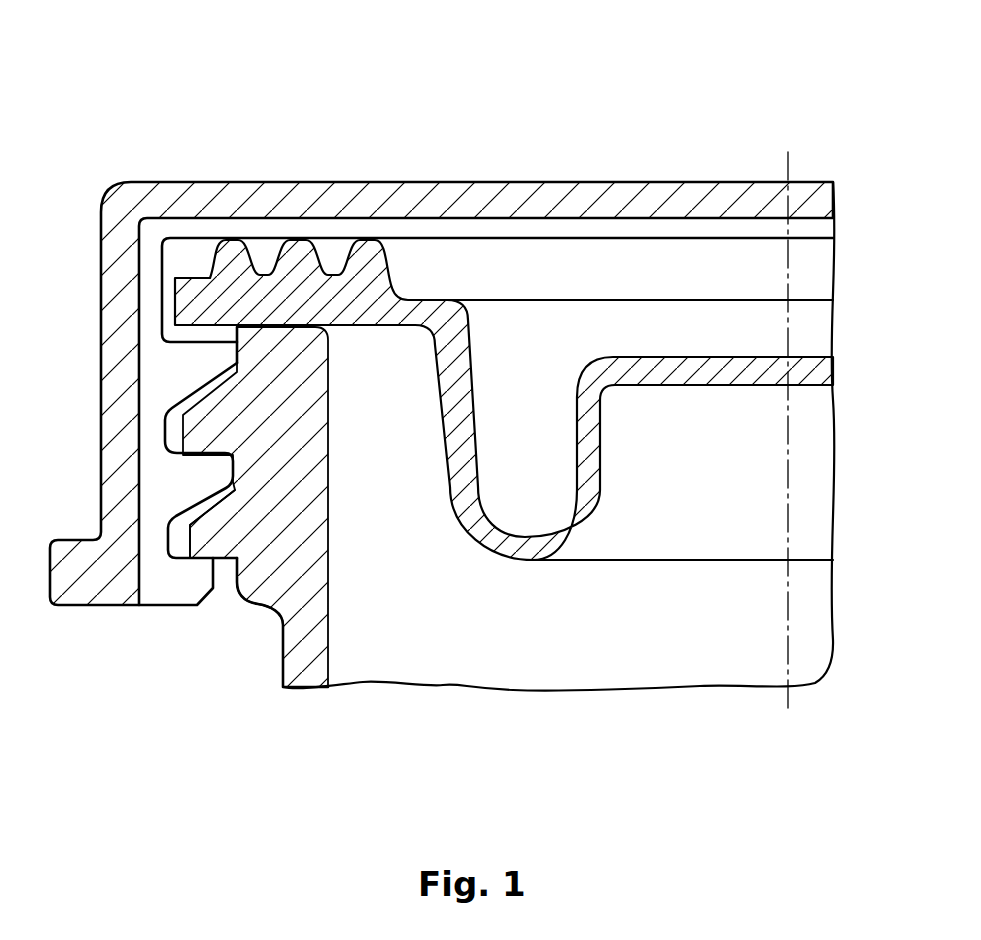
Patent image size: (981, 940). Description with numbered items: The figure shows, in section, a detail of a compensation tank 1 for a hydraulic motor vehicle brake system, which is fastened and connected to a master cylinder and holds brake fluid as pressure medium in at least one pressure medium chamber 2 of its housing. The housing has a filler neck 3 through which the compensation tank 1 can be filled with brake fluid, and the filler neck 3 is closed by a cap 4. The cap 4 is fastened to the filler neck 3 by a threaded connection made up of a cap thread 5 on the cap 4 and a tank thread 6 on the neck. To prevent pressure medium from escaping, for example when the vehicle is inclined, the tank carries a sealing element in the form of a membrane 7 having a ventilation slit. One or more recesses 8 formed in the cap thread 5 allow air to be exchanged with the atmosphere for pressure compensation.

The compensation tank 1 is at (678, 121).
The pressure medium chamber 2 is at (596, 659).
The filler neck 3 is at (302, 603).
The cap 4 is at (495, 183).
The cap thread 5 is at (193, 471).
The tank thread 6 is at (219, 540).
The membrane 7 is at (813, 367).
The recesses 8 is at (170, 580).